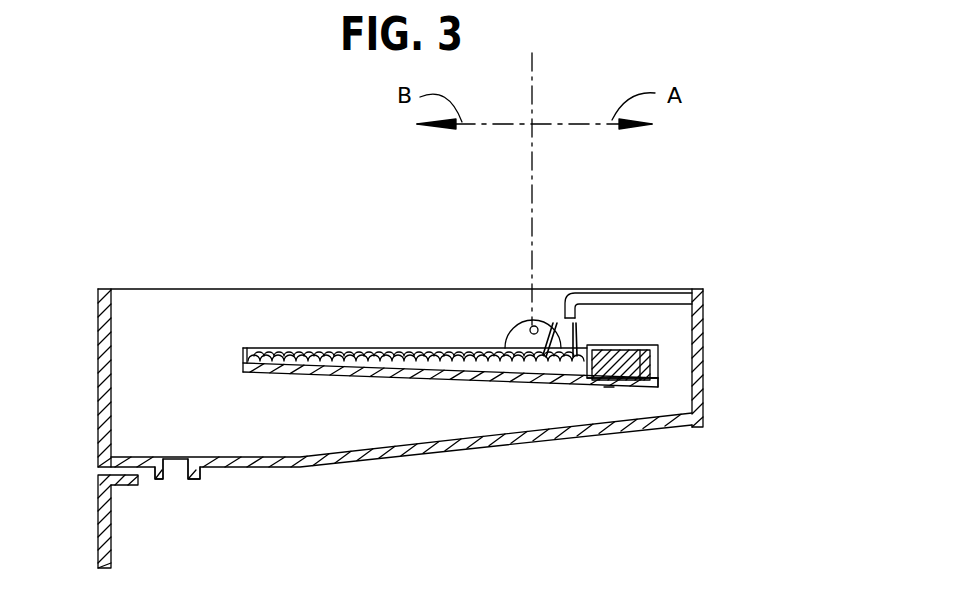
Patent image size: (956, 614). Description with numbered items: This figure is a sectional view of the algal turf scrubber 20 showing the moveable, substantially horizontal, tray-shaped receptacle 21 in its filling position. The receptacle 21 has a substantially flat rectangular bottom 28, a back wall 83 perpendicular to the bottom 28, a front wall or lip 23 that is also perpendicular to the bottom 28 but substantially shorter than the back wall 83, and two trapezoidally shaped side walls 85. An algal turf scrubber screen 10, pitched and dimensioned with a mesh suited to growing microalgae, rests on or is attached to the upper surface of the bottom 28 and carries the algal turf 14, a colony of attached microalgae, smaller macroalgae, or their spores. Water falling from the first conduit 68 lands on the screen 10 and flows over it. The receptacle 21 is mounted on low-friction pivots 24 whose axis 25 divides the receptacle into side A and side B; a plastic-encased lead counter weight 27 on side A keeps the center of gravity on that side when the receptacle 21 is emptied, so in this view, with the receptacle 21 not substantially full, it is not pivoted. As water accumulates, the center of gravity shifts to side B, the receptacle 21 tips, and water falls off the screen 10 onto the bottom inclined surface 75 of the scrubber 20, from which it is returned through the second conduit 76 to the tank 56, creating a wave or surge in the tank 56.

The algal turf scrubber screen 10 is at (455, 350).
The algal turf 14 is at (287, 347).
The scrubber 20 is at (633, 340).
The receptacle 21 is at (660, 355).
The front wall or lip 23 is at (243, 352).
The pivots 24 is at (530, 327).
The axis 25 is at (532, 85).
The counter weight 27 is at (593, 382).
The bottom 28 is at (608, 387).
The tank 56 is at (98, 512).
The first conduit 68 is at (637, 298).
The bottom inclined surface 75 is at (470, 450).
The second conduit 76 is at (180, 470).
The back wall 83 is at (660, 373).
The side walls 85 is at (360, 347).